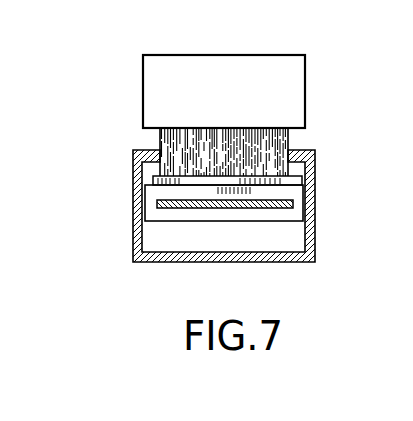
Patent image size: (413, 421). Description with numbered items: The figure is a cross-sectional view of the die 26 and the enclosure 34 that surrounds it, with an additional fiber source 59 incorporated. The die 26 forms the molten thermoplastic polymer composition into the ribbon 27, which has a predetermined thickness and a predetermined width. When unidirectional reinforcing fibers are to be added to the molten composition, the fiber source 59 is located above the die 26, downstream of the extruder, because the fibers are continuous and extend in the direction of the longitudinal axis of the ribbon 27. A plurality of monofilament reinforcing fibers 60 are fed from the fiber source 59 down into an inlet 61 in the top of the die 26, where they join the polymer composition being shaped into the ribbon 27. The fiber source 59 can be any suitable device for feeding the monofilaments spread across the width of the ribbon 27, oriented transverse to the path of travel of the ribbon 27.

The fiber source 59 is at (291, 66).
The monofilament reinforcing fibers 60 is at (293, 138).
The inlet 61 is at (302, 179).
The die 26 is at (150, 213).
The ribbon 27 is at (218, 208).
The enclosure 34 is at (132, 240).